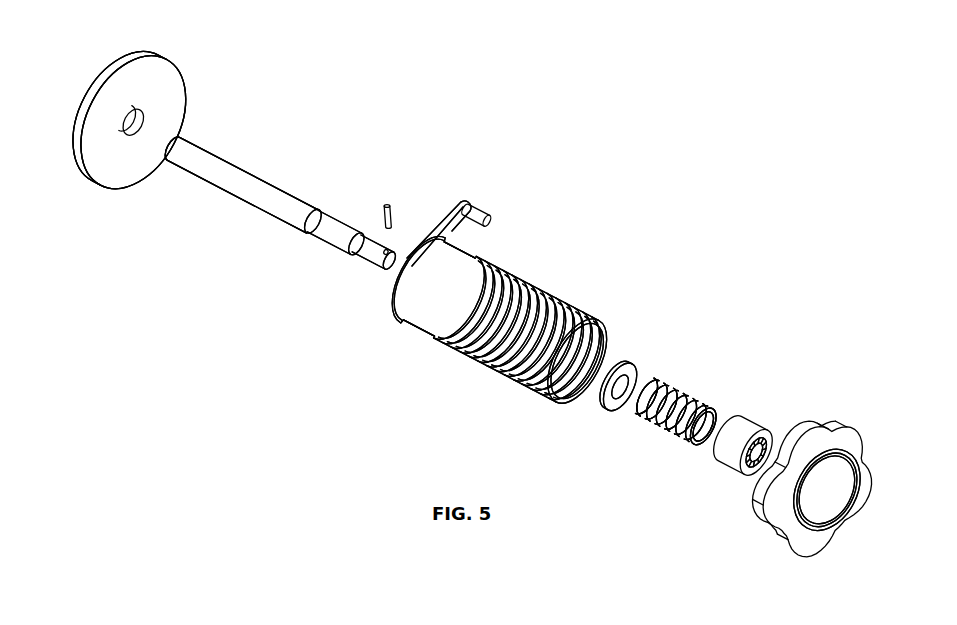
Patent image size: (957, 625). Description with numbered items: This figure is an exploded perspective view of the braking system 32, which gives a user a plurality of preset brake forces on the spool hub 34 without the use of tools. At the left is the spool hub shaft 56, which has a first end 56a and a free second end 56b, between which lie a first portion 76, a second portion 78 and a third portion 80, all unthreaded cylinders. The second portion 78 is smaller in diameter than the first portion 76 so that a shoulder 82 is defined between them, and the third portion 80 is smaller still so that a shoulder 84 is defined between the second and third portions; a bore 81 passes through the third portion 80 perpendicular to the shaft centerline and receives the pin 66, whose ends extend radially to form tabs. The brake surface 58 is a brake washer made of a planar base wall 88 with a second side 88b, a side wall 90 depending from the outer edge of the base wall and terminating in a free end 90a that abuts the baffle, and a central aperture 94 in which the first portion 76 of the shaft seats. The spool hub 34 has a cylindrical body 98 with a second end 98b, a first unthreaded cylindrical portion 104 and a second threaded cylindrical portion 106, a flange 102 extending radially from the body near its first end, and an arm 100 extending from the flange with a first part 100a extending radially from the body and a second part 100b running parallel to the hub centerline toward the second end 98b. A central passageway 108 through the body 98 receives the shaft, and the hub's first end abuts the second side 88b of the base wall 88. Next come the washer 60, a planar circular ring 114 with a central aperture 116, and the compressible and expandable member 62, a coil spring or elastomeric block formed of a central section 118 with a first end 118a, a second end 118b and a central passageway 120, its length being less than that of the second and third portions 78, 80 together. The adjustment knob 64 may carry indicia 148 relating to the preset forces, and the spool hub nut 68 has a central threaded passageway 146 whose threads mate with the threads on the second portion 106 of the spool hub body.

The braking system 32 is at (628, 203).
The spool hub 34 is at (424, 330).
The spool hub shaft 56 is at (227, 172).
The first end of spool hub shaft 56a is at (172, 153).
The second end of spool hub shaft 56b is at (383, 263).
The brake surface 58 is at (155, 75).
The washer 60 is at (622, 362).
The compressible and expandable member 62 is at (686, 392).
The adjustment knob 64 is at (758, 407).
The pin 66 is at (389, 211).
The spool hub nut 68 is at (871, 442).
The first portion 76 is at (247, 188).
The second portion 78 is at (325, 232).
The third portion 80 is at (370, 250).
The bore 81 is at (388, 243).
The shoulder 82 is at (320, 213).
The shoulder 84 is at (357, 255).
The base wall 88 is at (117, 148).
The second side of base wall 88b is at (175, 107).
The side wall 90 is at (130, 63).
The free end of side wall 90a is at (113, 68).
The central aperture 94 is at (128, 126).
The cylindrical body 98 is at (470, 267).
The second end of body 98b is at (570, 377).
The arm 100 is at (462, 240).
The first part of arm 100a is at (447, 227).
The second part of arm 100b is at (481, 206).
The flange 102 is at (397, 312).
The first unthreaded cylindrical portion 104 is at (445, 322).
The second threaded cylindrical portion 106 is at (530, 290).
The central passageway 108 is at (598, 343).
The circular ring 114 is at (622, 402).
The central aperture 116 is at (660, 383).
The central section 118 is at (670, 428).
The first end of central section 118a is at (652, 382).
The second end of central section 118b is at (690, 440).
The central passageway 120 is at (708, 420).
The central threaded passageway 146 is at (858, 492).
The indicia 148 is at (773, 452).